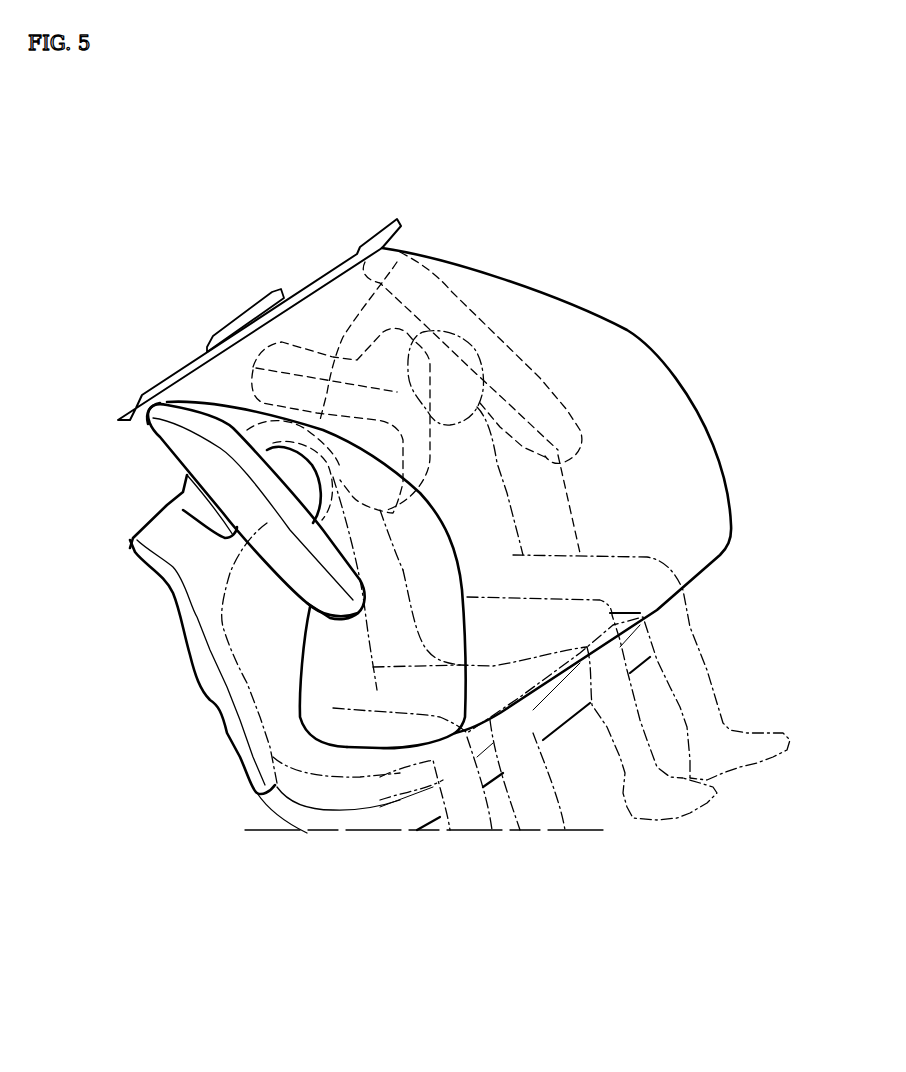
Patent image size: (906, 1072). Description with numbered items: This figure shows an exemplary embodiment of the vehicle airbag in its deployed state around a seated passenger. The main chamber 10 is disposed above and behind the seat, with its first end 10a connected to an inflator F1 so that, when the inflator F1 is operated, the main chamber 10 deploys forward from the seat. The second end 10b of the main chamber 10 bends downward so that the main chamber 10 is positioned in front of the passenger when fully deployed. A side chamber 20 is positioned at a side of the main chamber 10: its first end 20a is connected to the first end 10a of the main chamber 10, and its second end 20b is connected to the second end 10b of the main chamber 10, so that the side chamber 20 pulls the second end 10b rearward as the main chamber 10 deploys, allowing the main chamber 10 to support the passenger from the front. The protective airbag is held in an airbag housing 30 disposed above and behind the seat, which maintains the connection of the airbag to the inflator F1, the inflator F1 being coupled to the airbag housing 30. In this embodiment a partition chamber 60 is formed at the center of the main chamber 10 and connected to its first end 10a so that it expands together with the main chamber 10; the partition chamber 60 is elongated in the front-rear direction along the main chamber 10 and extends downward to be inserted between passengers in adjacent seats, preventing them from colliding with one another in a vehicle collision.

The main chamber 10 is at (678, 374).
The first end of the main chamber 10a is at (212, 408).
The second end of the main chamber 10b is at (377, 750).
The side chamber 20 is at (267, 523).
The first end of the side chamber 20a is at (152, 427).
The second end of the side chamber 20b is at (323, 592).
The airbag housing 30 is at (294, 295).
The partition chamber 60 is at (403, 260).
The inflator F1 is at (244, 312).